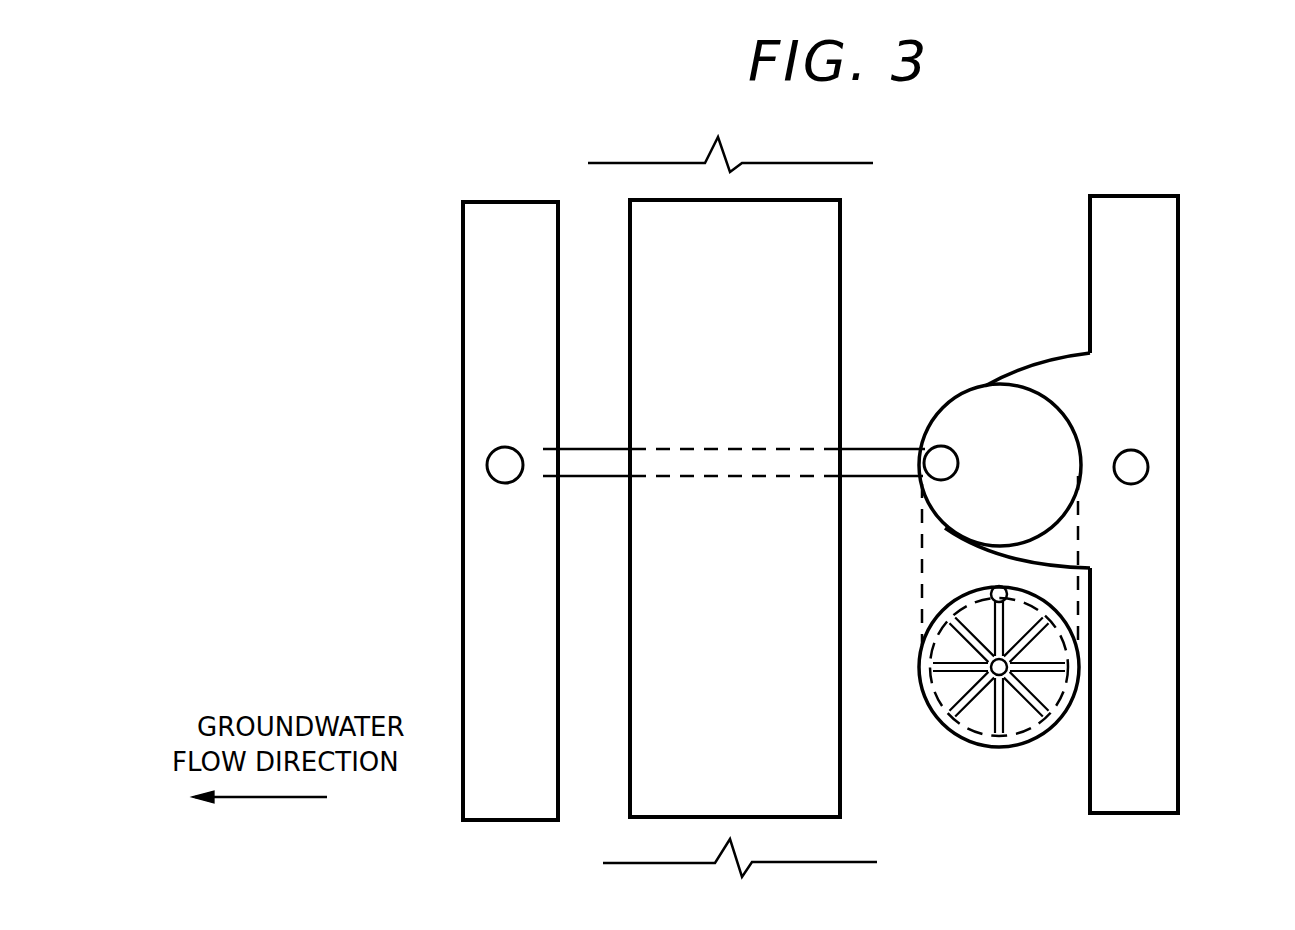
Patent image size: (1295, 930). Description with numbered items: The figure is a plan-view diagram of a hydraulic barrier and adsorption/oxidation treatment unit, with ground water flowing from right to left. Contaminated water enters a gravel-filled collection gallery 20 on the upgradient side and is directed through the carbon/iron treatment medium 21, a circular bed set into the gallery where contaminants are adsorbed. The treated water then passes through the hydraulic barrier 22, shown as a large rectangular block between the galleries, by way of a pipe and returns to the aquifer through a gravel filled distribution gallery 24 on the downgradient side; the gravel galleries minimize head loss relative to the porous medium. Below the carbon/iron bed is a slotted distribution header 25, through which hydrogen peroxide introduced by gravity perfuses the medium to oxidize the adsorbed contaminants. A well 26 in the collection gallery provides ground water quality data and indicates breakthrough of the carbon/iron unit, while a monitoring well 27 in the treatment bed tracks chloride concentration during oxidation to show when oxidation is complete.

The gravel-filled collection gallery 20 is at (1180, 642).
The carbon/iron treatment medium 21 is at (994, 384).
The hydraulic barrier 22 is at (840, 255).
The gravel filled distribution gallery 24 is at (463, 540).
The slotted distribution header 25 is at (988, 748).
The well 26 is at (1150, 449).
The monitoring well 27 is at (922, 447).